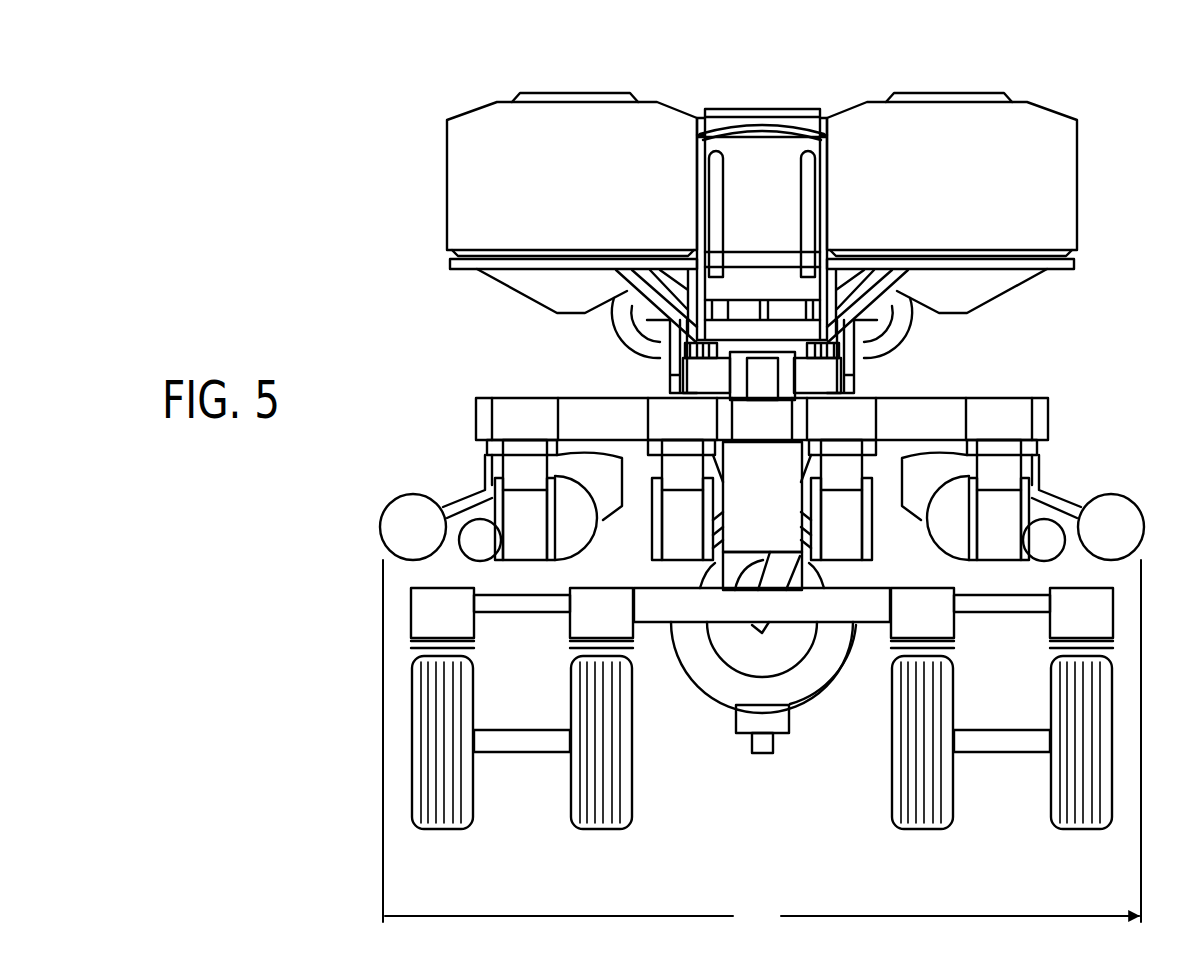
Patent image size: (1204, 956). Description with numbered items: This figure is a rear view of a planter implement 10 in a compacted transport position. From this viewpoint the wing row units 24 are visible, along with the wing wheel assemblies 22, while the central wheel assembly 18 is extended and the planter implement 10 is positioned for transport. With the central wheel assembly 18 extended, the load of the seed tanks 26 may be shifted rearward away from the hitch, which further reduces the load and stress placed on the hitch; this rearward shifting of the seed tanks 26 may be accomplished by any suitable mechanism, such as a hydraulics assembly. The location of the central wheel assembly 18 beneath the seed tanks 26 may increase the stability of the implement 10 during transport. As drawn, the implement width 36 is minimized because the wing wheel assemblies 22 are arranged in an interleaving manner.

The planter implement 10 is at (444, 83).
The seed tanks 26 is at (862, 130).
The wing row units 24 is at (1074, 461).
The wing wheel assemblies 22 is at (732, 647).
The central wheel assembly 18 is at (910, 835).
The implement width 36 is at (762, 745).